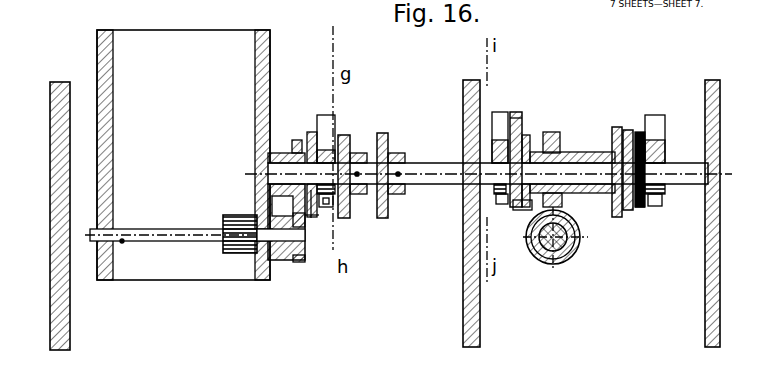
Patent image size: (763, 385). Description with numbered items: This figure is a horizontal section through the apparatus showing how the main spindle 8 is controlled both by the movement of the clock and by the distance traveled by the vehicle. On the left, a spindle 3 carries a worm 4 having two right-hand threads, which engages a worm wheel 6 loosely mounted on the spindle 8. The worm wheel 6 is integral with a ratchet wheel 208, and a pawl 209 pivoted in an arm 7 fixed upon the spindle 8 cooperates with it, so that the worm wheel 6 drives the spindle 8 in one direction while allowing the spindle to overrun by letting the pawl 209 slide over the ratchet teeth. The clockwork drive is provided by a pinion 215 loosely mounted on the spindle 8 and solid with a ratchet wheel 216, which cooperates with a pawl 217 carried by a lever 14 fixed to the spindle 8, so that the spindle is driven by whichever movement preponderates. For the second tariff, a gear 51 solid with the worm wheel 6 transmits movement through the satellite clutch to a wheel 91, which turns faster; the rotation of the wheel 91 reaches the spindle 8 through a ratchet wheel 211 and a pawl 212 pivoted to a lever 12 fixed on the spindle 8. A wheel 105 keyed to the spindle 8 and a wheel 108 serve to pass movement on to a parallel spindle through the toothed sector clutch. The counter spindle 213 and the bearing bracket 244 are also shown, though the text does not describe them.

The spindle 3 is at (563, 235).
The worm 4 is at (572, 253).
The worm wheel 6 is at (557, 144).
The arm 7 is at (500, 112).
The main spindle 8 is at (430, 169).
The lever 12 is at (666, 138).
The lever 14 is at (336, 114).
The gear 51 is at (616, 127).
The wheel 91 is at (629, 130).
The wheel 105 is at (392, 134).
The wheel 108 is at (348, 136).
The ratchet wheel 208 is at (536, 236).
The pawl 209 is at (523, 118).
The ratchet wheel 211 is at (641, 212).
The pawl 212 is at (641, 130).
The counter shaft 213 is at (155, 233).
The pinion 215 is at (296, 172).
The ratchet wheel 216 is at (316, 219).
The pawl 217 is at (311, 131).
The bearing bracket 244 is at (296, 263).